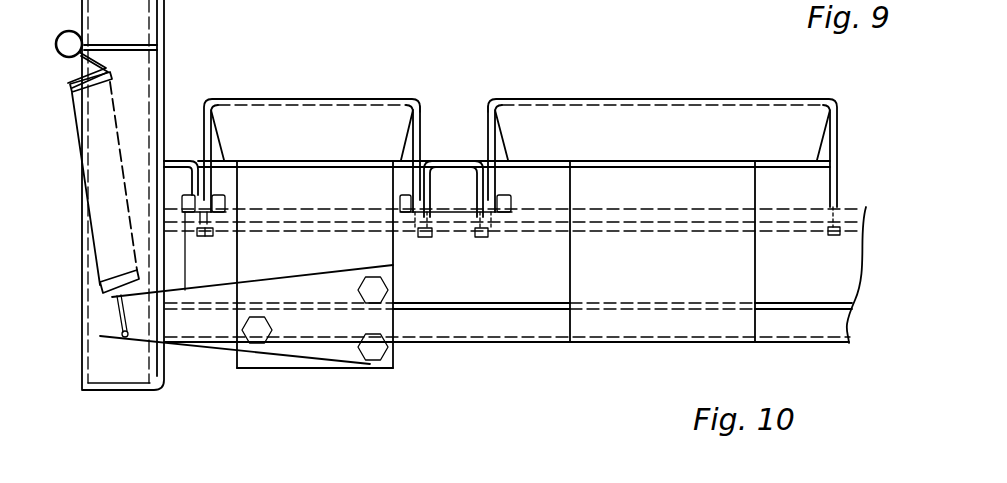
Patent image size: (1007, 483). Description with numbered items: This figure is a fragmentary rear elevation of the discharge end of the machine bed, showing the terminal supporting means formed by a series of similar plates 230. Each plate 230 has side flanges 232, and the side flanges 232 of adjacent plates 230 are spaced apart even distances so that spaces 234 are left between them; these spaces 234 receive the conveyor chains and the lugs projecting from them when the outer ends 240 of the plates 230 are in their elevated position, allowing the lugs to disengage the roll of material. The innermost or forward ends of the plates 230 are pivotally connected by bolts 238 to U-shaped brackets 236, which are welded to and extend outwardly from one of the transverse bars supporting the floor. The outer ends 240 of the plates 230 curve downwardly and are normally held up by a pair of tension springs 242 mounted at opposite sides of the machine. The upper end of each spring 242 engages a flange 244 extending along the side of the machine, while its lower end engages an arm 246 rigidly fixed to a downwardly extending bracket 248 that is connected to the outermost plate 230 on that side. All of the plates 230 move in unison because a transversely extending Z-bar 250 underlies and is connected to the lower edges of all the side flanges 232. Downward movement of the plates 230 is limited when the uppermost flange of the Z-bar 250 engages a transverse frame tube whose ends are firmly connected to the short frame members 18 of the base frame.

In FIG. 10, the short frame member 18 is at (97, 349).
In FIG. 10, the plate 230 is at (330, 76).
In FIG. 10, the side flange 232 is at (212, 121).
In FIG. 10, the space 234 is at (454, 85).
In FIG. 10, the U-shaped bracket 236 is at (457, 165).
In FIG. 10, the bolt 238 is at (508, 196).
In FIG. 10, the outer end 240 is at (317, 152).
In FIG. 9, the tension spring 242 is at (563, 11).
In FIG. 10, the tension spring 242 is at (85, 123).
In FIG. 10, the flange 244 is at (133, 43).
In FIG. 10, the arm 246 is at (221, 343).
In FIG. 10, the bracket 248 is at (243, 252).
In FIG. 10, the Z-bar 250 is at (425, 292).